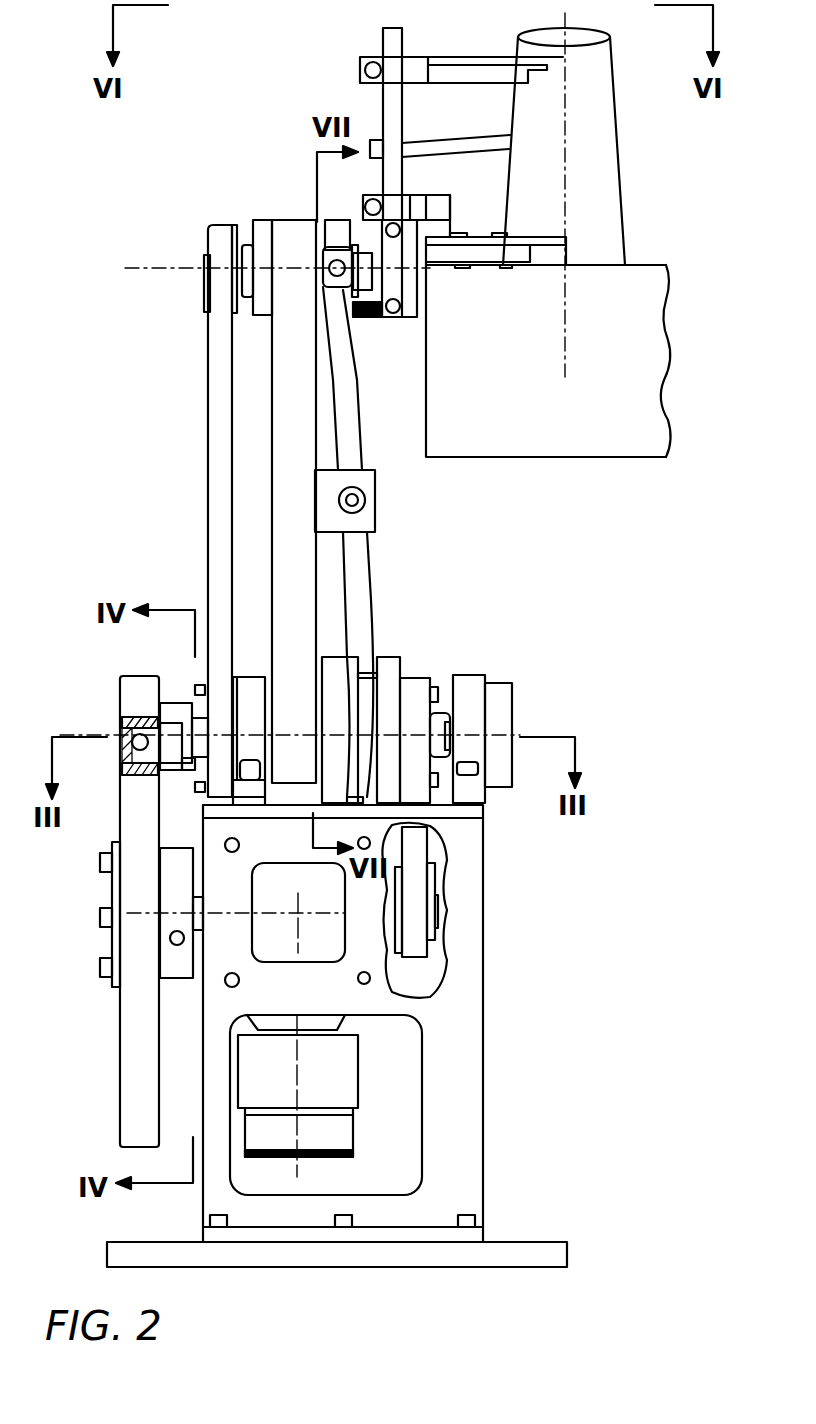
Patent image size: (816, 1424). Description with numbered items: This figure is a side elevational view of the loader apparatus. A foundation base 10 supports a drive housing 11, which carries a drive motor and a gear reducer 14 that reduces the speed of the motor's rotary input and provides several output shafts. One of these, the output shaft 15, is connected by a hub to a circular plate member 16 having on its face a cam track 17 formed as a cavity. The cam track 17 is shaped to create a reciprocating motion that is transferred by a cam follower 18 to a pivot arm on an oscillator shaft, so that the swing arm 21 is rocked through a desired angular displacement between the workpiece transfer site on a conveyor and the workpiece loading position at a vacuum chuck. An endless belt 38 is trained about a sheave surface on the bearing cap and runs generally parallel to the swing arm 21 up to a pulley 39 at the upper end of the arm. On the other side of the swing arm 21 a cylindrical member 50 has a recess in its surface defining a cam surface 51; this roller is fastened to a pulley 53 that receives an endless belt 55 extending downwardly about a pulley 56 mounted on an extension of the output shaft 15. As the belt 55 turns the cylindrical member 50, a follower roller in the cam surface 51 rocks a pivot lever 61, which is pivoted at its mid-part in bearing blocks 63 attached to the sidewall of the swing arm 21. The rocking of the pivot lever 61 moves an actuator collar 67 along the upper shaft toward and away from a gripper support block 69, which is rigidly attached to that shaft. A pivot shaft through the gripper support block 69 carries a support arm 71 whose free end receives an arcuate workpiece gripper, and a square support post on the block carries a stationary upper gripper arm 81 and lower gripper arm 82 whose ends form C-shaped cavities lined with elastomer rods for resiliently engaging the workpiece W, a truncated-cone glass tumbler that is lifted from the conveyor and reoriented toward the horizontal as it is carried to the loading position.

The foundation base 10 is at (227, 1270).
The drive housing 11 is at (483, 1002).
The gear reducer 14 is at (345, 1080).
The output shaft 15 is at (197, 930).
The circular plate member 16 is at (133, 1087).
The cam track 17 is at (122, 743).
The cam follower 18 is at (122, 767).
The swing arm 21 is at (288, 497).
The endless belt 38 is at (212, 381).
The pulley 39 is at (220, 245).
The cylindrical member 50 is at (390, 657).
The cam surface 51 is at (337, 663).
The pulley 53 is at (447, 690).
The endless belt 55 is at (418, 678).
The pulley 56 is at (430, 943).
The pivot lever 61 is at (362, 436).
The bearing blocks 63 is at (375, 512).
The actuator collar 67 is at (340, 220).
The gripper support block 69 is at (373, 238).
The support arm 71 is at (441, 137).
The upper gripper arm 81 is at (413, 57).
The lower gripper arm 82 is at (473, 268).
The workpiece W is at (612, 180).